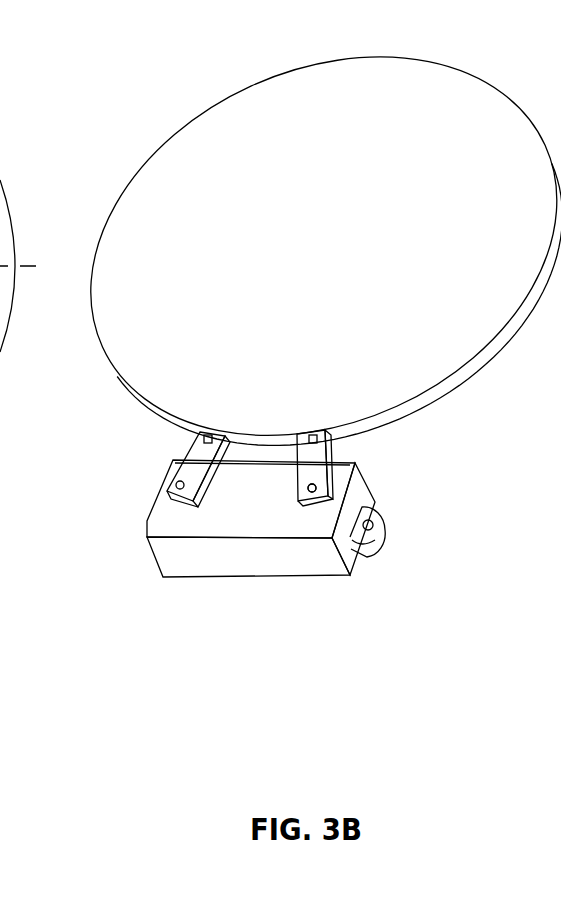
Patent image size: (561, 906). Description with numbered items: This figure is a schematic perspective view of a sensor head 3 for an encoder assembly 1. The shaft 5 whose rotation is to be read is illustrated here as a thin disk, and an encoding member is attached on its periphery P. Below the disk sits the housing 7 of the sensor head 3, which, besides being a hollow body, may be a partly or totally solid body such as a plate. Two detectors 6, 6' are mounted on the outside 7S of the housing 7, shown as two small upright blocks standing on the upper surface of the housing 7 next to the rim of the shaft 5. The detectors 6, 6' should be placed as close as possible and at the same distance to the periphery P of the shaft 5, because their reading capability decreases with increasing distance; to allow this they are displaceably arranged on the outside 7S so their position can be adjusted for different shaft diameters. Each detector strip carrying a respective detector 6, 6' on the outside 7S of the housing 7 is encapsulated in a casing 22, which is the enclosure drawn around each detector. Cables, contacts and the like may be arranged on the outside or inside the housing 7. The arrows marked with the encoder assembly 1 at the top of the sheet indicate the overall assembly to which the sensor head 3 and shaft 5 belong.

The encoder assembly 1 is at (42, 22).
The sensor head 3 is at (126, 590).
The shaft 5 is at (329, 243).
The detector 6 is at (331, 435).
The detector 6' is at (235, 435).
The housing 7 is at (280, 564).
The outside of the housing 7S is at (273, 522).
The casing 22 is at (317, 468).
The periphery P is at (480, 376).